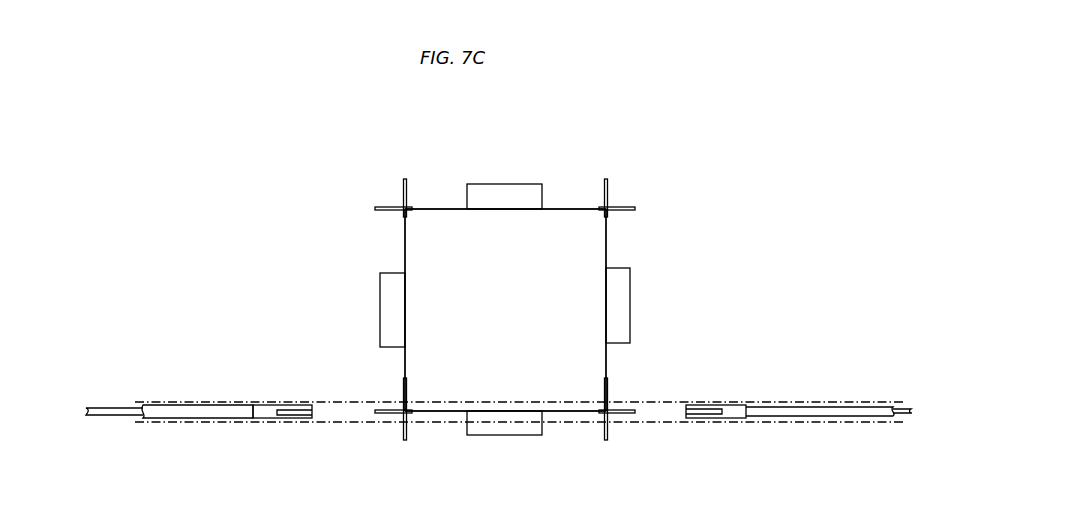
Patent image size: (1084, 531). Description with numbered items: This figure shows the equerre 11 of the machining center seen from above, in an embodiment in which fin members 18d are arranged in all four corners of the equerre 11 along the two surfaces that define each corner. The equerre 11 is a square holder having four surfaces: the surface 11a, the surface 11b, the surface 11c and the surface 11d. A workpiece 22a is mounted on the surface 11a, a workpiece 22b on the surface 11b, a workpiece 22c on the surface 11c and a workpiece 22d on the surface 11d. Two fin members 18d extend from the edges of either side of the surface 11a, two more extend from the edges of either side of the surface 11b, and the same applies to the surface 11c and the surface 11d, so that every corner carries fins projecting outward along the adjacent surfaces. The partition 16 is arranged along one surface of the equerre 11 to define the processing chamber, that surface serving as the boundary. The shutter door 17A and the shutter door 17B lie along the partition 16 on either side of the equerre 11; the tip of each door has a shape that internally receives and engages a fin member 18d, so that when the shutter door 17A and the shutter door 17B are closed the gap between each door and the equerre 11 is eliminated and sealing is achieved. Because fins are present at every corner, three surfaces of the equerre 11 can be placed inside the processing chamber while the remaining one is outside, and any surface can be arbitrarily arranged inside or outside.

The equerre 11 is at (598, 258).
The surface 11a is at (565, 209).
The surface 11b is at (607, 377).
The surface 11c is at (450, 410).
The surface 11d is at (405, 375).
The workpiece 22a is at (480, 184).
The workpiece 22b is at (630, 284).
The workpiece 22c is at (523, 435).
The workpiece 22d is at (380, 307).
The fin members 18d is at (392, 208).
The partition 16 is at (316, 402).
The shutter door 17A is at (229, 413).
The shutter door 17B is at (783, 405).